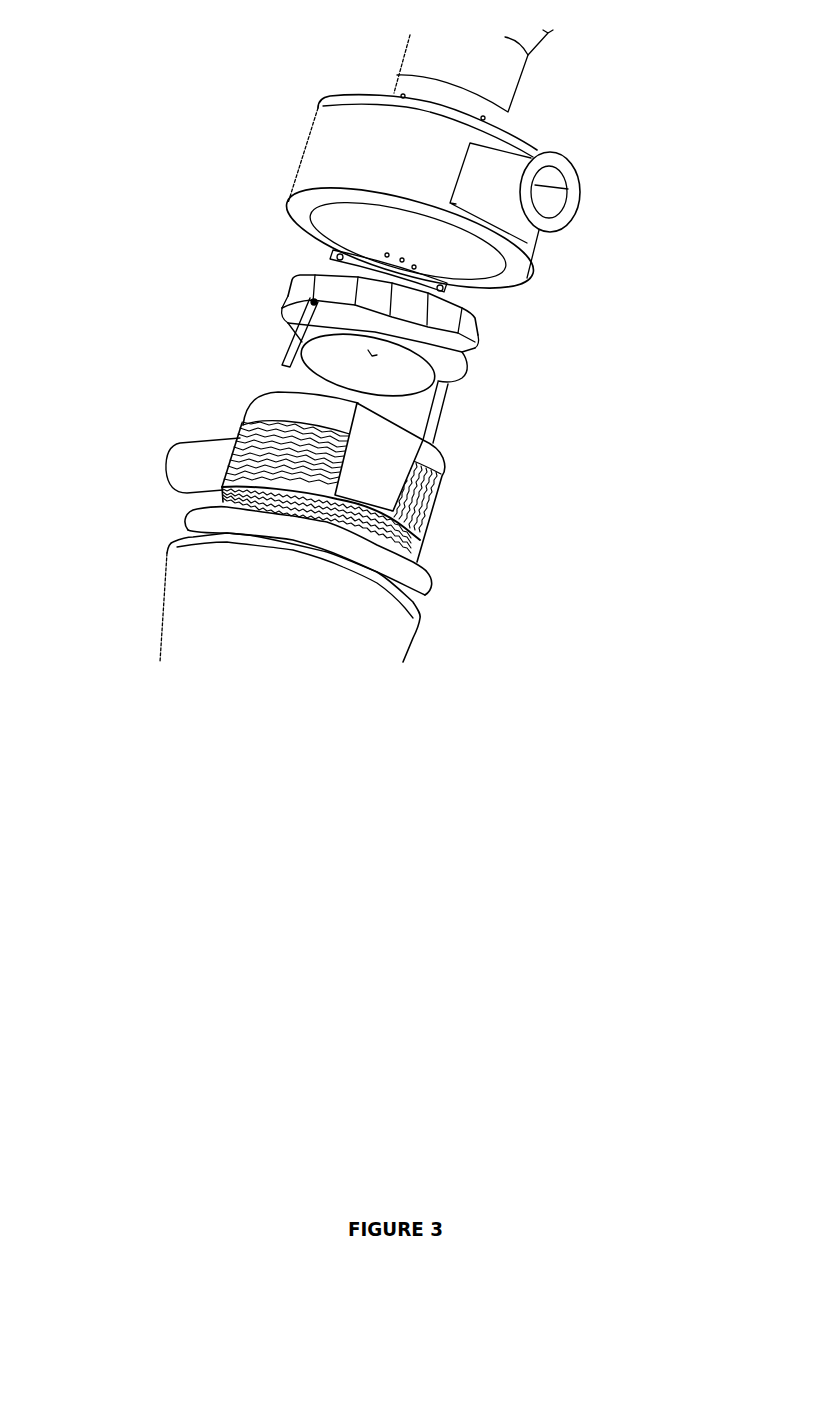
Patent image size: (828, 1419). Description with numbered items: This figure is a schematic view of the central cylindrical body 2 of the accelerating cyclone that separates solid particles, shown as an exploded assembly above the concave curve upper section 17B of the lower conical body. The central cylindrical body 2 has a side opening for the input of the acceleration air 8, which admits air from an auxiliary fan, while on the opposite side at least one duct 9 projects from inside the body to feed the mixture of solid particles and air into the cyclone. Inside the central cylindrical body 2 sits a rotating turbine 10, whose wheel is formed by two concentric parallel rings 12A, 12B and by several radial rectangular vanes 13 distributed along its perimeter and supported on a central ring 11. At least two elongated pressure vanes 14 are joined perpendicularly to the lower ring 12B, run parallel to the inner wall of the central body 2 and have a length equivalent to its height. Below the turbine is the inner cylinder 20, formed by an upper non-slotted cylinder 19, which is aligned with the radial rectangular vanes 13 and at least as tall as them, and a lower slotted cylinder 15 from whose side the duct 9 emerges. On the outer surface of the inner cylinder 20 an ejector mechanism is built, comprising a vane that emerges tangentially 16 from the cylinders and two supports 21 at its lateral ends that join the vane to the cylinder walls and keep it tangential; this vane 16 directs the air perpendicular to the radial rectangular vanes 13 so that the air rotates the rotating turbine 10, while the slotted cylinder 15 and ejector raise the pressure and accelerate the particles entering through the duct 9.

The central cylindrical body 2 is at (322, 147).
The side opening for the input of the acceleration air 8 is at (568, 189).
The duct 9 is at (203, 462).
The rotating turbine 10 is at (280, 292).
The central ring 11 is at (397, 347).
The upper ring 12A is at (463, 315).
The lower ring 12B is at (462, 360).
The radial rectangular vanes 13 is at (457, 340).
The elongated pressure vanes 14 is at (283, 350).
The slotted cylinder 15 is at (430, 510).
The tangentially emerging vane 16 is at (363, 452).
The concave curve upper section 17B is at (367, 570).
The non-slotted cylinder 19 is at (272, 410).
The inner cylinder 20 is at (303, 463).
The supports 21 is at (415, 557).